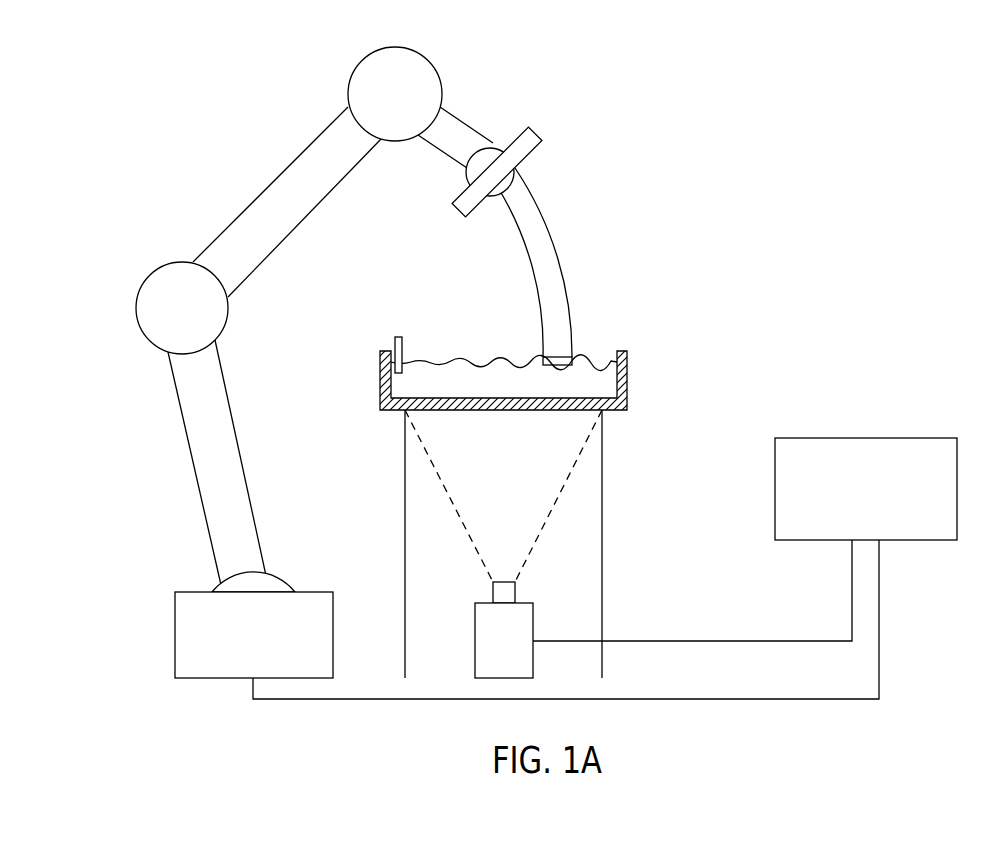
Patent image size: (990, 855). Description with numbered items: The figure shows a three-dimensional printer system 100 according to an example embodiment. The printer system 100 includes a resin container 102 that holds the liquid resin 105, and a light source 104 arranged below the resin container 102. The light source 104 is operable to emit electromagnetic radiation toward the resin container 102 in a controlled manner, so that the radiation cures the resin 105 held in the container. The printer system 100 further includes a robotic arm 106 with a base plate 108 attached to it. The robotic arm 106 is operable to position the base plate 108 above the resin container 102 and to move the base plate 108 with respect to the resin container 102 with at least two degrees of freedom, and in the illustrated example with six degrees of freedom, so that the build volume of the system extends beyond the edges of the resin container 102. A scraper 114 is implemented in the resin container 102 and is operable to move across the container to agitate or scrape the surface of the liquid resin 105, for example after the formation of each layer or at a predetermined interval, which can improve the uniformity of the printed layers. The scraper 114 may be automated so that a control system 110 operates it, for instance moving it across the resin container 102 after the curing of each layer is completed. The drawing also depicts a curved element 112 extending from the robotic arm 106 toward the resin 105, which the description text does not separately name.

The 3D printer system 100 is at (759, 202).
The resin container 102 is at (628, 362).
The light source 104 is at (533, 612).
The resin 105 is at (593, 358).
The robotic arm 106 is at (268, 187).
The base plate 108 is at (532, 157).
The control system 110 is at (875, 437).
The curved nozzle / resin dispenser 112 is at (558, 263).
The scraper 114 is at (398, 335).